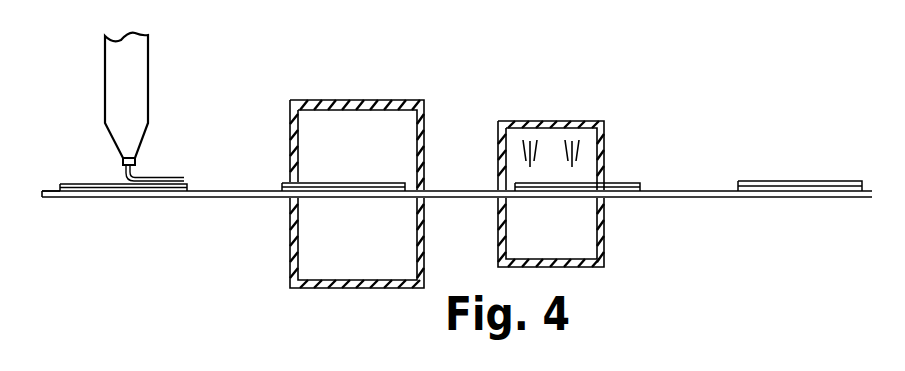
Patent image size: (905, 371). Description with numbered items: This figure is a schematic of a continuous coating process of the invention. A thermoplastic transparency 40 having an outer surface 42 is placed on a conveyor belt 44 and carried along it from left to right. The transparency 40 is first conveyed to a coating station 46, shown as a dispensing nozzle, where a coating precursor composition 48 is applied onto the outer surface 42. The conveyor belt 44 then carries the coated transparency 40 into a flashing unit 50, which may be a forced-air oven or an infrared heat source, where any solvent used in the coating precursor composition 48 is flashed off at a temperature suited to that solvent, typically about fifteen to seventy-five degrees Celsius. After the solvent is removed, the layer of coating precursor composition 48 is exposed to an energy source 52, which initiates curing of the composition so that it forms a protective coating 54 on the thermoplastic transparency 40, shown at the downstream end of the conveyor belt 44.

The thermoplastic transparency 40 is at (110, 198).
The outer surface 42 is at (171, 183).
The conveyor belt 44 is at (52, 189).
The coating station 46 is at (133, 67).
The coating precursor composition 48 is at (137, 174).
The flashing unit 50 is at (373, 100).
The energy source 52 is at (586, 121).
The protective coating 54 is at (765, 181).